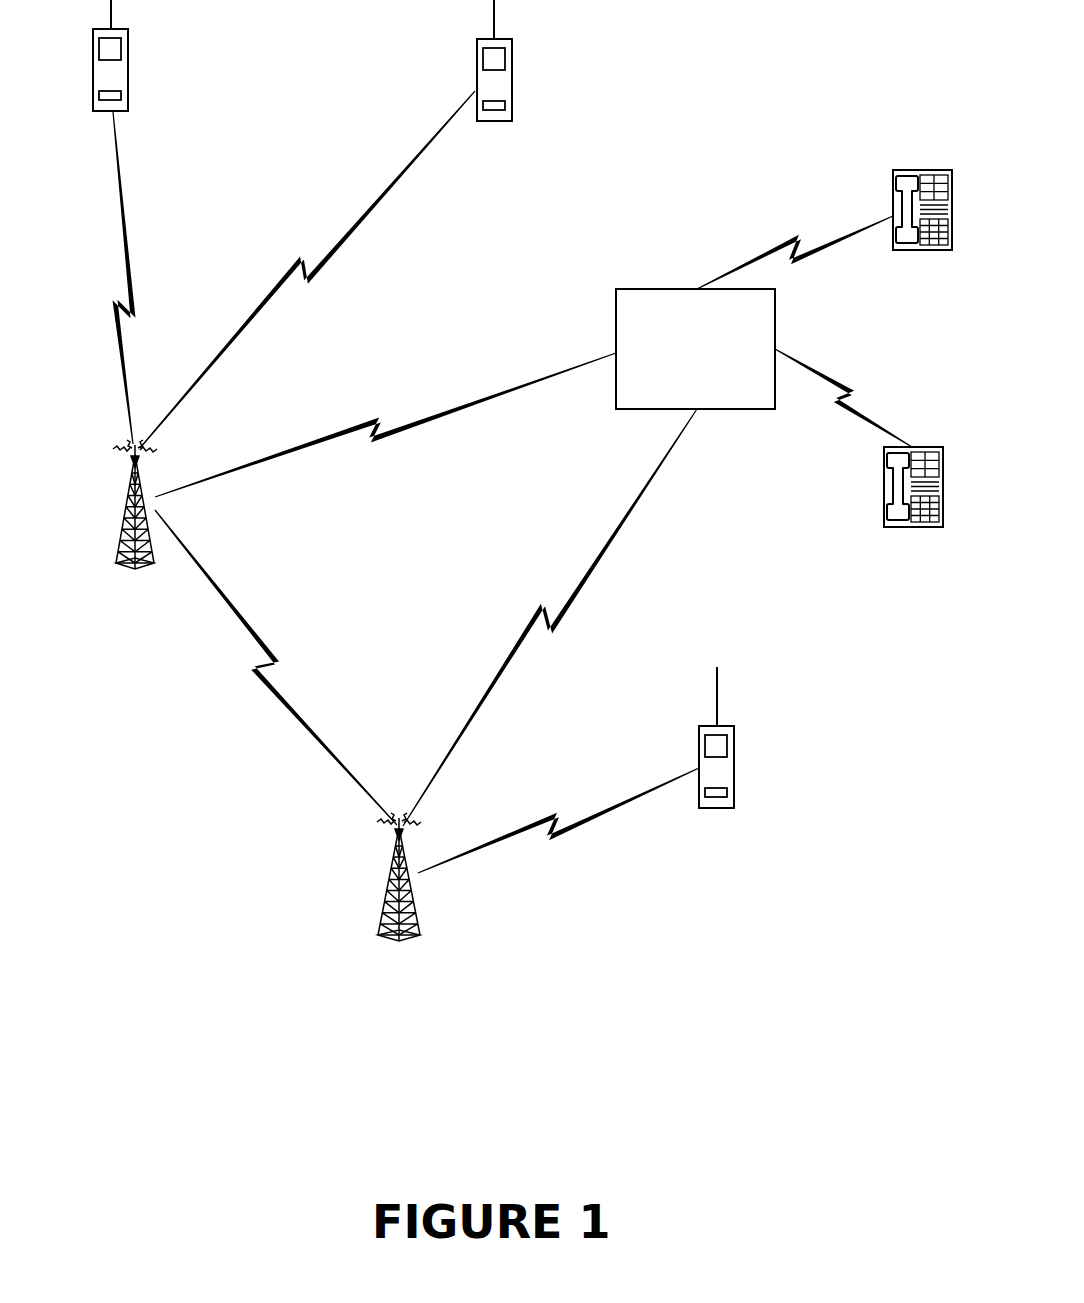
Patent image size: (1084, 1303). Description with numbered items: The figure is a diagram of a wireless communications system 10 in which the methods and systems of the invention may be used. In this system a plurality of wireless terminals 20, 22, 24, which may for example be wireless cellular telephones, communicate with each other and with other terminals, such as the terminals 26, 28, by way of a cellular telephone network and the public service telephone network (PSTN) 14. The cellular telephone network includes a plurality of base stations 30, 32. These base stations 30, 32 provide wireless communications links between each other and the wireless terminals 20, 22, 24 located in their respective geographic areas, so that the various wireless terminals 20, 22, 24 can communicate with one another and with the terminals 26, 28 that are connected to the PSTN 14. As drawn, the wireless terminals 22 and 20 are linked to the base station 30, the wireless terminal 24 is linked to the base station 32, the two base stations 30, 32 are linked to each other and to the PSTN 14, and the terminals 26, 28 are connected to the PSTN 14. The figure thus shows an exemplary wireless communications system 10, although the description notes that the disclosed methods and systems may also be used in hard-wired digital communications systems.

The wireless communications system 10 is at (522, 520).
The public service telephone network (PSTN) 14 is at (682, 393).
The wireless terminal 20 is at (546, 151).
The wireless terminal 22 is at (161, 143).
The wireless terminal 24 is at (769, 837).
The terminal 26 is at (928, 564).
The terminal 28 is at (938, 286).
The base station 30 is at (149, 606).
The base station 32 is at (413, 981).